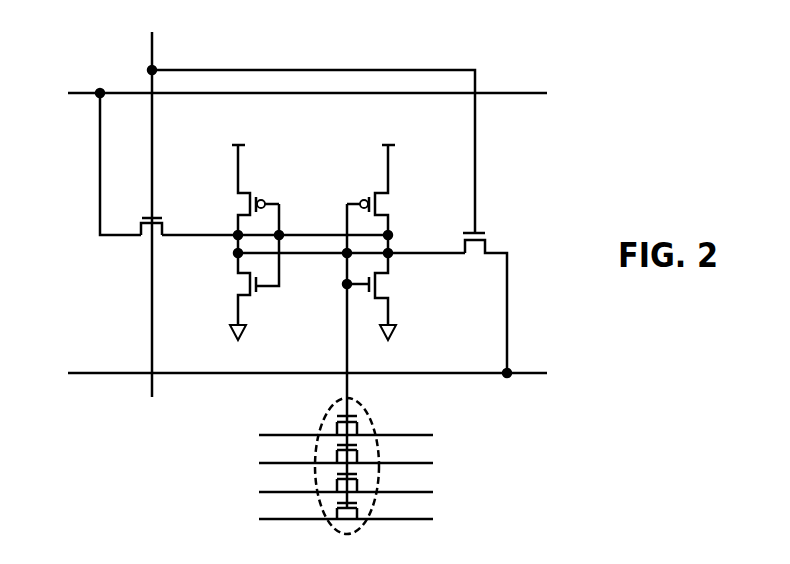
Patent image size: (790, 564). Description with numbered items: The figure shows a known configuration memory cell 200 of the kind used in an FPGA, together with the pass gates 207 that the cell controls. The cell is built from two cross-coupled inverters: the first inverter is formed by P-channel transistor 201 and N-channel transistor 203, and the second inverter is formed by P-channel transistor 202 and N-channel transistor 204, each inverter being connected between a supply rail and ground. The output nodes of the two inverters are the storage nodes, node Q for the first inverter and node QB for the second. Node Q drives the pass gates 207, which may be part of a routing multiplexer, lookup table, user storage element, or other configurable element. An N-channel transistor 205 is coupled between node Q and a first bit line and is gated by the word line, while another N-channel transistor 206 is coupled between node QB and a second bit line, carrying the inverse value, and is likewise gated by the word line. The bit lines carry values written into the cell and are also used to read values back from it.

The configuration memory cell 200 is at (352, 271).
The P-channel transistor 201 is at (250, 205).
The P-channel transistor 202 is at (400, 204).
The N-channel transistor 203 is at (247, 283).
The N-channel transistor 204 is at (400, 284).
The N-channel transistor 205 is at (141, 229).
The N-channel transistor 206 is at (485, 242).
The pass gates 207 is at (373, 422).